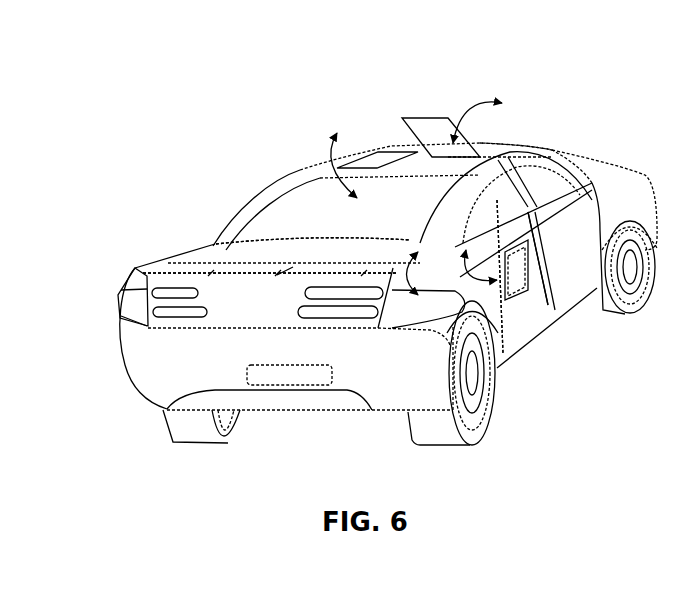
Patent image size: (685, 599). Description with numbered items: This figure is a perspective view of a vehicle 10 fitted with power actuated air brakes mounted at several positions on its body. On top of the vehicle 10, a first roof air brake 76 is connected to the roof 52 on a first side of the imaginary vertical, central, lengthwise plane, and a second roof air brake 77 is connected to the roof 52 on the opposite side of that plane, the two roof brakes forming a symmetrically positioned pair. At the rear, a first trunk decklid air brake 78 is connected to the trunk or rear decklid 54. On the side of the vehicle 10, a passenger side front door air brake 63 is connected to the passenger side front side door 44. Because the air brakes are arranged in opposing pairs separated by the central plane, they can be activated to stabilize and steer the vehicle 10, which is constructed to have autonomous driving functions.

The vehicle 10 is at (267, 108).
The first roof air brake 76 is at (391, 145).
The second roof air brake 77 is at (434, 122).
The roof 52 is at (503, 145).
The trunk or rear decklid 54 is at (203, 258).
The first trunk decklid air brake 78 is at (224, 266).
The passenger side front side door 44 is at (543, 303).
The passenger side front door air brake 63 is at (520, 285).